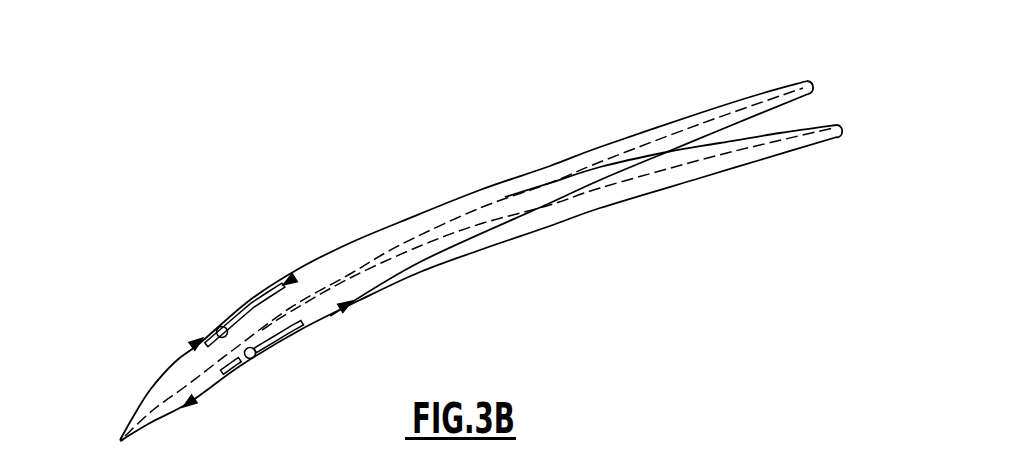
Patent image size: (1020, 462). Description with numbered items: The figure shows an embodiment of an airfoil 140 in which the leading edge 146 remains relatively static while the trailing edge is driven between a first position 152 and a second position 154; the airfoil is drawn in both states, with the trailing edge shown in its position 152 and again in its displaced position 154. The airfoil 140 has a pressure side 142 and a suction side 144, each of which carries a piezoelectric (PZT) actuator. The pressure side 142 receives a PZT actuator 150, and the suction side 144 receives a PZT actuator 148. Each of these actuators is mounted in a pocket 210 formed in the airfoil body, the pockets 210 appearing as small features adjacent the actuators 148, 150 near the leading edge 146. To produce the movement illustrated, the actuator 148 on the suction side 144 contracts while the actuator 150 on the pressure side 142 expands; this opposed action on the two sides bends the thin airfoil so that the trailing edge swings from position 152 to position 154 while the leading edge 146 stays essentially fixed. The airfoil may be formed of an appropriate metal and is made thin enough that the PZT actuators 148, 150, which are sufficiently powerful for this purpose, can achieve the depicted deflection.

The airfoil 140 is at (748, 212).
The pressure side 142 is at (527, 233).
The suction side 144 is at (797, 125).
The leading edge 146 is at (118, 439).
The PZT actuator 148 is at (257, 293).
The PZT actuator 150 is at (283, 335).
The trailing edge 152 is at (840, 132).
The trailing edge position 154 is at (810, 81).
The pocket 210 is at (216, 332).